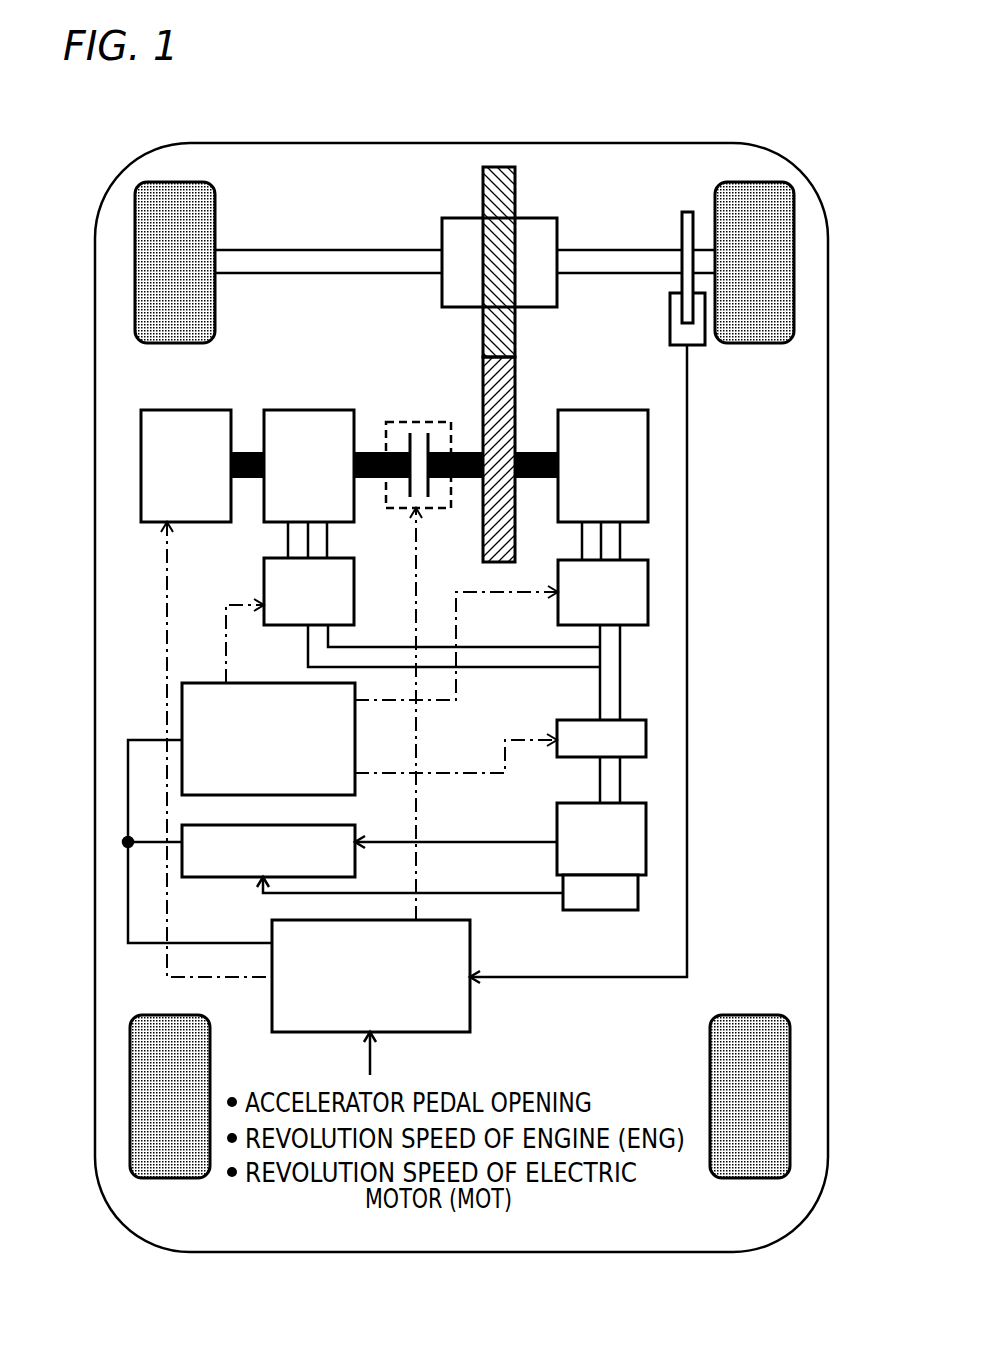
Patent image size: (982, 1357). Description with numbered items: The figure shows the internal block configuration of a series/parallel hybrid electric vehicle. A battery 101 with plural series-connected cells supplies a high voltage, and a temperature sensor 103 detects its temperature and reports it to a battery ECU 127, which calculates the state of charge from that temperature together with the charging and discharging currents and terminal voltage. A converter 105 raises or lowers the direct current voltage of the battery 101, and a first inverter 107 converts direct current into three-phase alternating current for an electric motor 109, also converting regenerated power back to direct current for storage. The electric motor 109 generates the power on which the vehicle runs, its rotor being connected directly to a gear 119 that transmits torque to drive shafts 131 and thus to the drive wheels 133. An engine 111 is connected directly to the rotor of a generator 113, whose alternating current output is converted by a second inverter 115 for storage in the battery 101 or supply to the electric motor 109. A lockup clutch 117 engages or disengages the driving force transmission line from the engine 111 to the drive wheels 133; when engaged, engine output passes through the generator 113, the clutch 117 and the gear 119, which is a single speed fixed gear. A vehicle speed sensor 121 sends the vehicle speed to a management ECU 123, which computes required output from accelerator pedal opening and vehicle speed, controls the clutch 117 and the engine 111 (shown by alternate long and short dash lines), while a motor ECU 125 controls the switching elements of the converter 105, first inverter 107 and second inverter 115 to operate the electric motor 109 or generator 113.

The battery 101 is at (646, 840).
The temperature sensor 103 is at (638, 895).
The converter 105 is at (646, 743).
The first inverter 107 is at (648, 590).
The electric motor 109 is at (648, 440).
The engine 111 is at (141, 437).
The generator 113 is at (298, 410).
The second inverter 115 is at (264, 590).
The lockup clutch 117 is at (408, 422).
The gearbox 119 is at (442, 230).
The vehicle speed sensor 121 is at (670, 320).
The management ECU 123 is at (470, 1013).
The motor ECU 125 is at (182, 712).
The battery ECU 127 is at (182, 857).
The drive shafts 131 is at (283, 250).
The drive wheels 133 is at (135, 250).